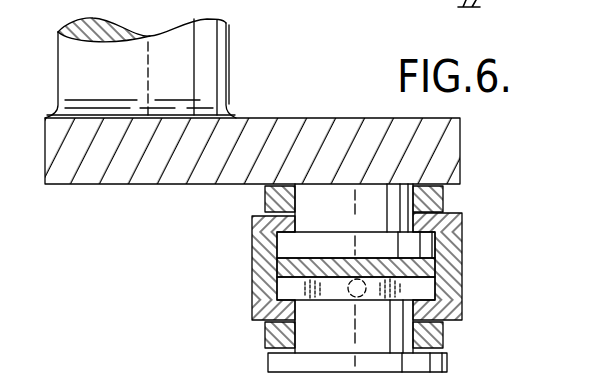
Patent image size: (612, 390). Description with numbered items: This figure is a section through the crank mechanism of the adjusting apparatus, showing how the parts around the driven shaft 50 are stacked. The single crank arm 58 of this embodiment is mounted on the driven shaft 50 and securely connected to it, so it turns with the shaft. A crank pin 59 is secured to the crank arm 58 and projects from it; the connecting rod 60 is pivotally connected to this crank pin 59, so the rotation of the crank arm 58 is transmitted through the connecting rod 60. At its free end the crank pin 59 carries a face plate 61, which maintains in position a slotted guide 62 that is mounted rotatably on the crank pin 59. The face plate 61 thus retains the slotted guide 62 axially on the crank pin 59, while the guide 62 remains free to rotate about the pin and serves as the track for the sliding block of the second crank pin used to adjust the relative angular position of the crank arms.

The driven shaft 50 is at (202, 68).
The crank arm 58 is at (330, 128).
The crank pin 59 is at (373, 204).
The connecting rod 60 is at (265, 202).
The face plate 61 is at (308, 240).
The slotted guide 62 is at (267, 265).